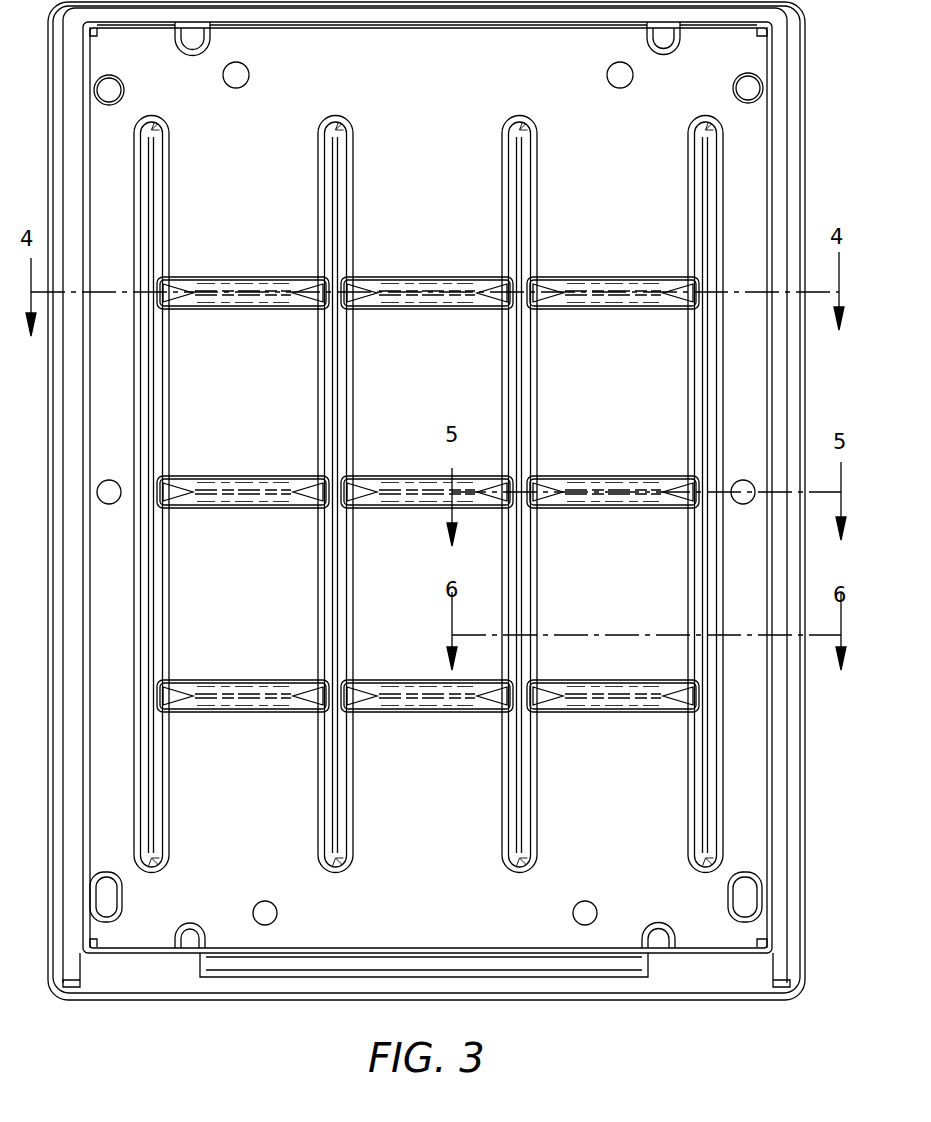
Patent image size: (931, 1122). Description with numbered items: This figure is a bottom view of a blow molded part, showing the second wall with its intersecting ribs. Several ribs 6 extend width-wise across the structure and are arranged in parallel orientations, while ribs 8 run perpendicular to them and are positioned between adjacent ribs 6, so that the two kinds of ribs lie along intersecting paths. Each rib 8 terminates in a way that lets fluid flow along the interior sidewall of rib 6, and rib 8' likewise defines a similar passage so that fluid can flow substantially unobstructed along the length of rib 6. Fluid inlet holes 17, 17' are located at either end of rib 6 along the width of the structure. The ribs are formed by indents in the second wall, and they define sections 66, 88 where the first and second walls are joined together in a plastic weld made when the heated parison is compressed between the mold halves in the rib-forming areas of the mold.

The rib 6 is at (708, 177).
The section 66 is at (702, 788).
The rib 8 is at (613, 267).
The rib 8' is at (613, 468).
The section 88 is at (633, 713).
The fluid inlet hole 17 is at (424, 928).
The fluid inlet hole 17' is at (427, 50).